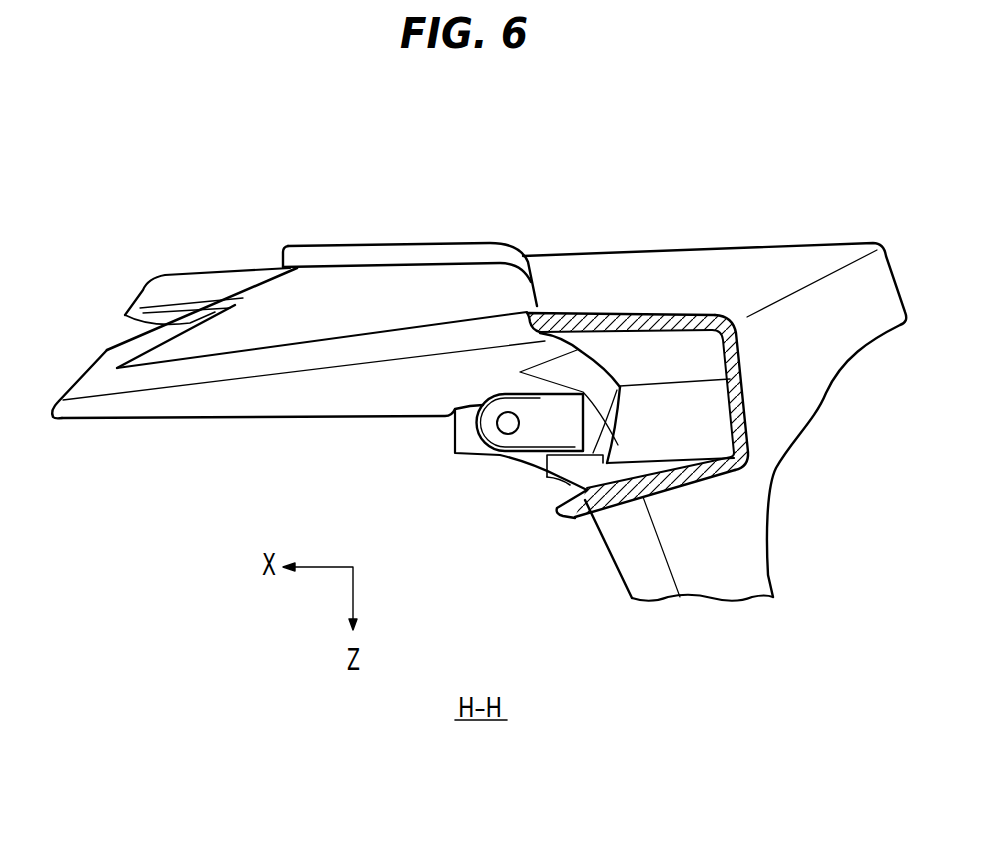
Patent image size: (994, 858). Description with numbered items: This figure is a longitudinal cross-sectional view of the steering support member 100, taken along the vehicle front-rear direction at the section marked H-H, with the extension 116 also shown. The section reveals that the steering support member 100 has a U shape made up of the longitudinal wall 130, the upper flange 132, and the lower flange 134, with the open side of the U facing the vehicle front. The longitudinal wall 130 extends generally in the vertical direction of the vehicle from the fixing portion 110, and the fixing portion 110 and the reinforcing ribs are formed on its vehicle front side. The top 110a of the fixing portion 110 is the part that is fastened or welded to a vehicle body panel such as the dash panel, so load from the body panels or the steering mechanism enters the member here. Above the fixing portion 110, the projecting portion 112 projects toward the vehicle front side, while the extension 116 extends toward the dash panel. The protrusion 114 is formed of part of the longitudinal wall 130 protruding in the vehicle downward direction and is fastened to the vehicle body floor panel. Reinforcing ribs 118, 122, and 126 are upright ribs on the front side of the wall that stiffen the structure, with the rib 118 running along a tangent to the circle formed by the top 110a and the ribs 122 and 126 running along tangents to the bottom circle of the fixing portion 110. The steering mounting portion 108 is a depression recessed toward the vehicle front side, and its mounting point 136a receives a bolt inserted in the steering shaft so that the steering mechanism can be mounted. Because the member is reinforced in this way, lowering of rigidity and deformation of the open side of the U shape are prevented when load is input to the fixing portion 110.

The steering support member 100 is at (537, 184).
The steering mounting portion 108 is at (485, 460).
The fixing portion 110 is at (260, 408).
The top of the fixing portion 110a is at (70, 386).
The projecting portion 112 is at (373, 245).
The protrusion 114 is at (716, 572).
The extension 116 is at (146, 295).
The reinforcing rib 118 is at (253, 312).
The reinforcing rib 122 is at (690, 353).
The reinforcing rib 126 is at (708, 420).
The longitudinal wall 130 is at (746, 347).
The upper flange 132 is at (630, 312).
The lower flange 134 is at (606, 505).
The mounting point 136a is at (500, 425).